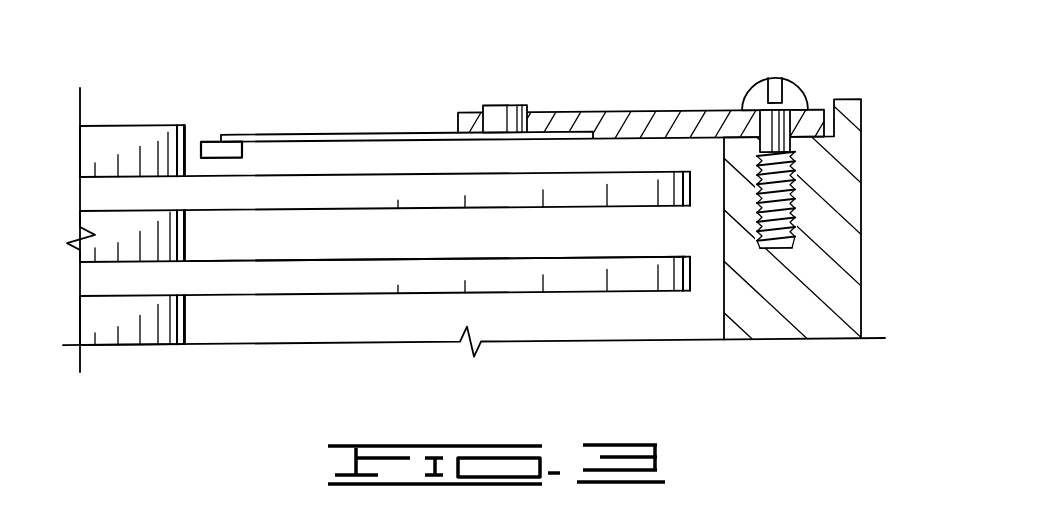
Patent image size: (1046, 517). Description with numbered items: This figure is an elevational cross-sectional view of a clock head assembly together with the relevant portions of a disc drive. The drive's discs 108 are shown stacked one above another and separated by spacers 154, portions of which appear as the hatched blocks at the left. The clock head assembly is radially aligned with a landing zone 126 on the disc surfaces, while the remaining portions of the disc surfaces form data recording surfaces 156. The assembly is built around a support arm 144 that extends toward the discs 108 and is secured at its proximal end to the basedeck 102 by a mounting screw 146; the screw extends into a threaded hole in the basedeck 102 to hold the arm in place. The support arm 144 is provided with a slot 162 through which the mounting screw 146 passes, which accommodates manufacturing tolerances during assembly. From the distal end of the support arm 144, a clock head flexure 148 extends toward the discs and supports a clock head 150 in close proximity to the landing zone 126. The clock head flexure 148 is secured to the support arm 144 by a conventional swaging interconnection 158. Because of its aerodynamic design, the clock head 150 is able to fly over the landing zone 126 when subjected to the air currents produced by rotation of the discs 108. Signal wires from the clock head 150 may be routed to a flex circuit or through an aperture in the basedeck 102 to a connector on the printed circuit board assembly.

The basedeck 102 is at (821, 310).
The discs 108 is at (368, 277).
The landing zone 126 is at (233, 363).
The support arm 144 is at (630, 125).
The mounting screw 146 is at (787, 99).
The clock head flexure 148 is at (355, 135).
The clock head 150 is at (220, 141).
The spacers 154 is at (112, 137).
The data recording surfaces 156 is at (515, 297).
The swaging interconnection 158 is at (505, 109).
The slot 162 is at (792, 192).